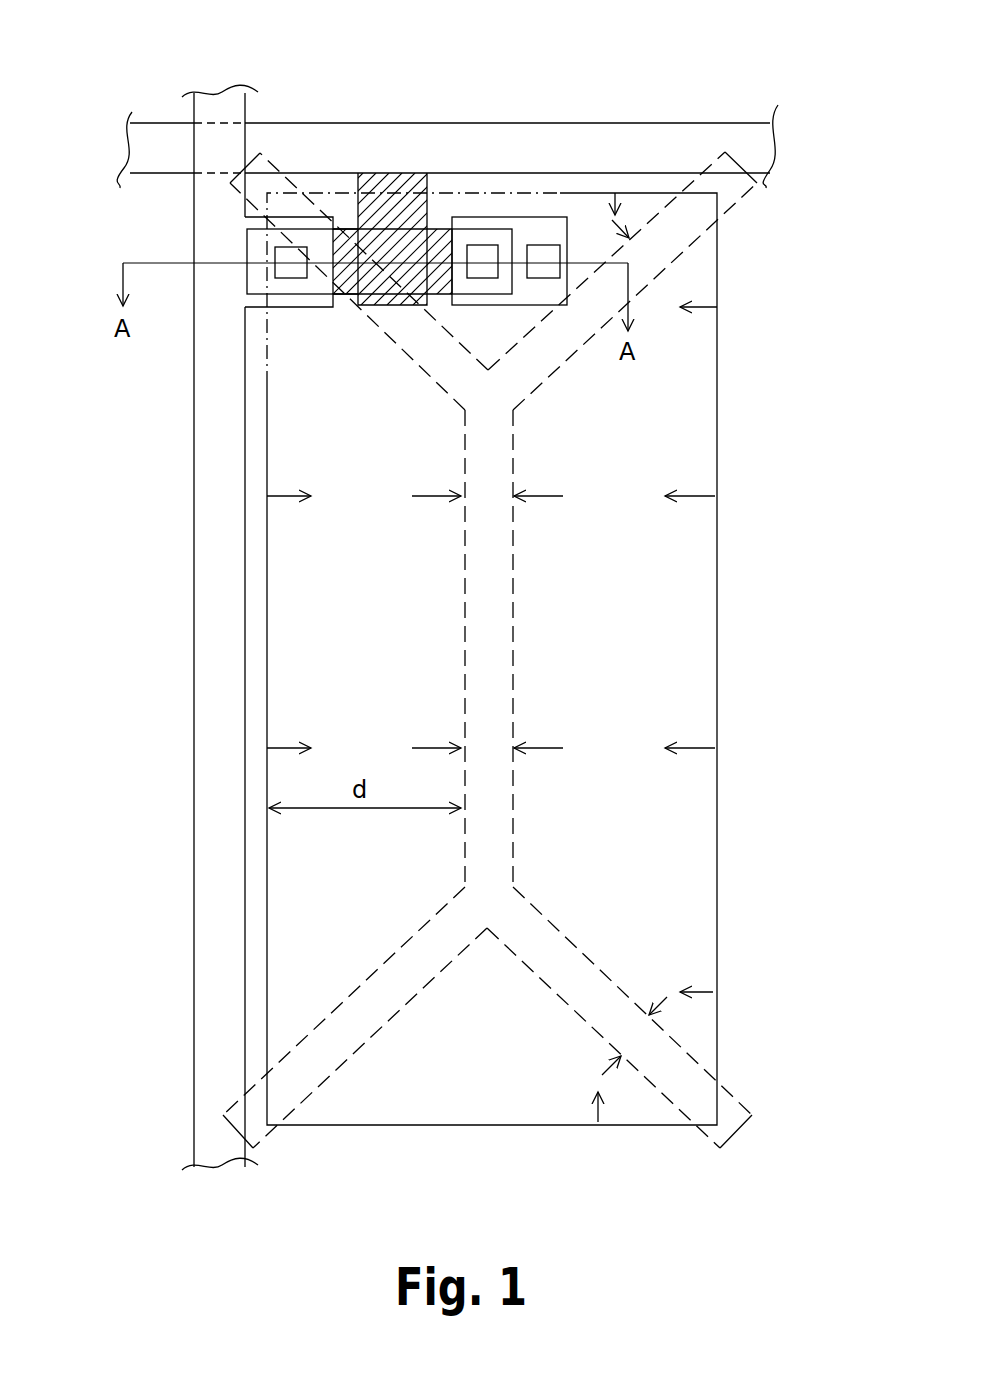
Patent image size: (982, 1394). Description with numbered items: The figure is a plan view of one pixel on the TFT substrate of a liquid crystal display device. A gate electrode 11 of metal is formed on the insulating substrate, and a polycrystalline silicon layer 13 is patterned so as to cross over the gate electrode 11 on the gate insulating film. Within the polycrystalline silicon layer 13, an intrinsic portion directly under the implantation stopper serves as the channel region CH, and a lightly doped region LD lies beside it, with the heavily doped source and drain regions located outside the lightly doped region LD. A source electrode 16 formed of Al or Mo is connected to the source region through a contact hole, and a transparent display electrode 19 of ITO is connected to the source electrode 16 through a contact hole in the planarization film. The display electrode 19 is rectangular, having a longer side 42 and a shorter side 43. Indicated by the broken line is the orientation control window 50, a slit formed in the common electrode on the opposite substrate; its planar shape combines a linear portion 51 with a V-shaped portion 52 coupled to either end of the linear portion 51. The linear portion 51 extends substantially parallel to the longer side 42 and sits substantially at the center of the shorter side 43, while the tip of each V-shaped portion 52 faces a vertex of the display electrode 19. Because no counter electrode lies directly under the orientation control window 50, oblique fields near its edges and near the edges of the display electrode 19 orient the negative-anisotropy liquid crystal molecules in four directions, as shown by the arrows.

The gate electrode 11 is at (397, 207).
The polycrystalline silicon layer 13 is at (347, 247).
The source electrode 16 is at (547, 228).
The display electrode 19 is at (652, 284).
The longer side 42 is at (263, 665).
The shorter side 43 is at (470, 1127).
The orientation control window 50 is at (493, 637).
The linear portion 51 is at (502, 545).
The V-shaped portion 52 is at (565, 355).
The lightly doped region LD is at (323, 283).
The channel region CH is at (390, 280).